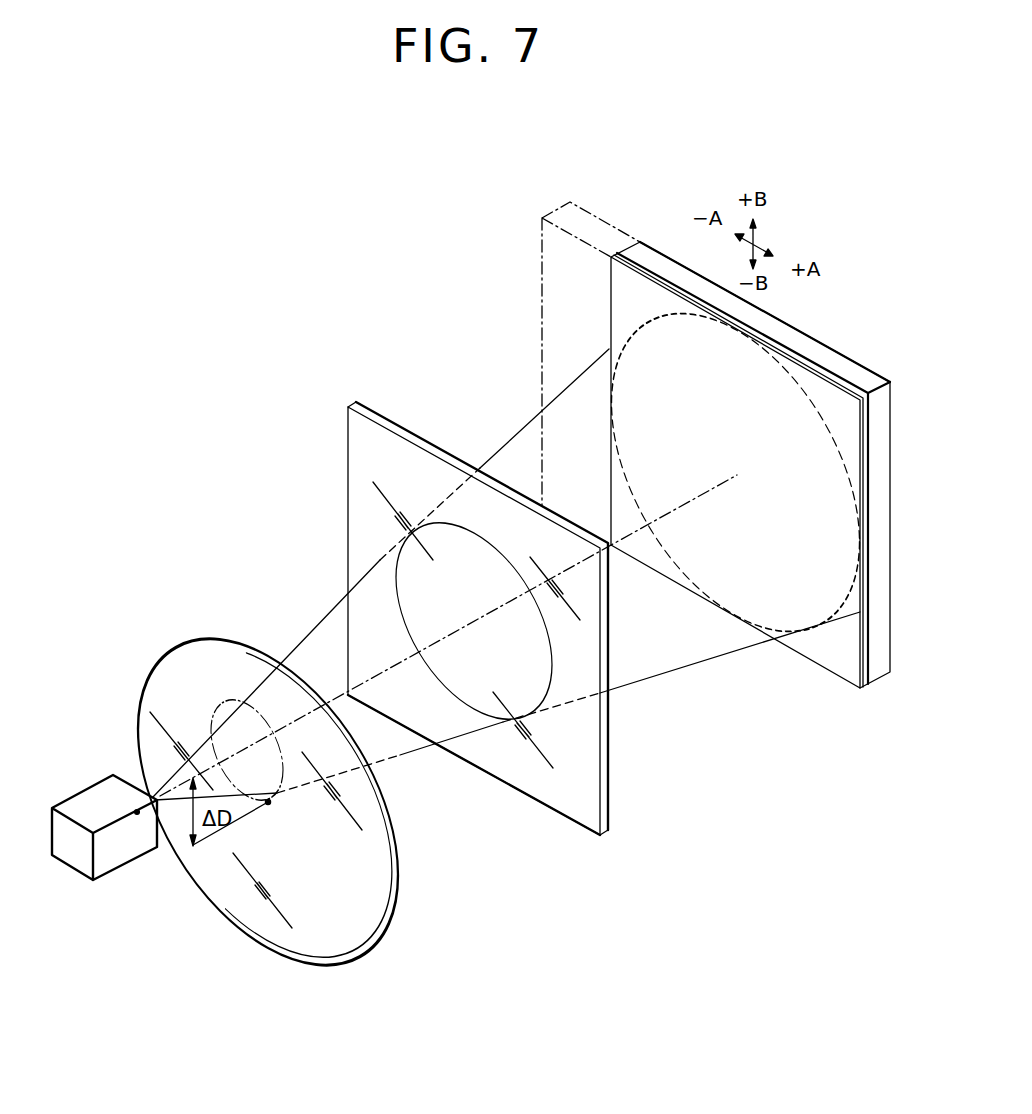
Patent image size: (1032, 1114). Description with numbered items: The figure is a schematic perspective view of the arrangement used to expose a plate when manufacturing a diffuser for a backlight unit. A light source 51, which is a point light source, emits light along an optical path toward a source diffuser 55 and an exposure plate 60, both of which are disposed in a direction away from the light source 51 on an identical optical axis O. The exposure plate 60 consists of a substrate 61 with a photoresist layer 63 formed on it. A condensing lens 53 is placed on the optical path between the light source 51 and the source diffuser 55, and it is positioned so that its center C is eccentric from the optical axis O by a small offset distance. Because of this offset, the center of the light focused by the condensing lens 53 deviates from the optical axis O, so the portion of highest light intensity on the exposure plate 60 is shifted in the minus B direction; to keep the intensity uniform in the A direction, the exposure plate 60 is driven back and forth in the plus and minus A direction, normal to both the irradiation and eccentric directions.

The light source 51 is at (100, 775).
The condensing lens 53 is at (237, 640).
The source diffuser 55 is at (396, 418).
The exposure plate 60 is at (716, 433).
The substrate 61 is at (638, 242).
The photoresist layer 63 is at (657, 277).
The center of the condensing lens C is at (268, 806).
The optical axis O is at (618, 540).